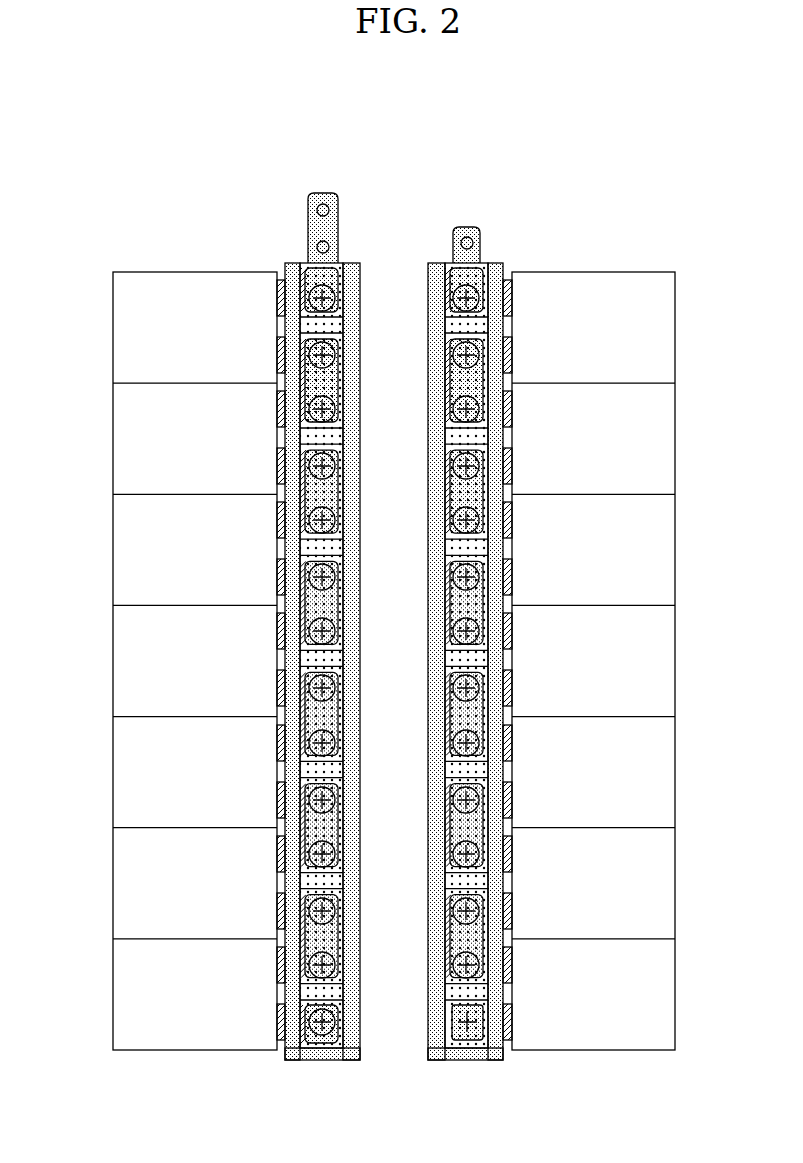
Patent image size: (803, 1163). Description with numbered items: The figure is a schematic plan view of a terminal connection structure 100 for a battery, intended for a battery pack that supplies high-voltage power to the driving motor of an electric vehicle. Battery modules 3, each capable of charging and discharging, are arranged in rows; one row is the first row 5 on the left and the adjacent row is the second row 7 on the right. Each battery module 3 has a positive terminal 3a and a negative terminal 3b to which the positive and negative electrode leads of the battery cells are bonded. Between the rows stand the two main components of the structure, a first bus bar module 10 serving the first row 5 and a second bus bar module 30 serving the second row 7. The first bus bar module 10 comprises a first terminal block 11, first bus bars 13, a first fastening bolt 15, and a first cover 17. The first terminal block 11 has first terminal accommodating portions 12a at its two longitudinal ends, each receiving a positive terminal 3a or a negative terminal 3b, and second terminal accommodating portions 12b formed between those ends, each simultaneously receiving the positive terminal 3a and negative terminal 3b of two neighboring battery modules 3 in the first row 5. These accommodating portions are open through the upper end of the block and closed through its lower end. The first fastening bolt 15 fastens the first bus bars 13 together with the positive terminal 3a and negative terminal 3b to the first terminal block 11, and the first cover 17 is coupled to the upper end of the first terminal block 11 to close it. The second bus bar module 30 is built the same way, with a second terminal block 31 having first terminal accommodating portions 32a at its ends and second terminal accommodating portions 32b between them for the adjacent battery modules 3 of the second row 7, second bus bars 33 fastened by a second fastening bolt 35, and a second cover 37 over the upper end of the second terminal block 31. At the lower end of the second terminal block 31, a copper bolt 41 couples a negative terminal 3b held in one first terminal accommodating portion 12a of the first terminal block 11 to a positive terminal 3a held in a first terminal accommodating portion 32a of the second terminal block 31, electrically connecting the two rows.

The terminal connection structure 100 is at (406, 120).
The battery module 3 is at (135, 551).
The positive terminal 3a is at (277, 297).
The negative terminal 3b is at (277, 352).
The first row 5 is at (166, 258).
The second row 7 is at (611, 255).
The first bus bar module 10 is at (242, 641).
The first terminal block 11 is at (366, 476).
The first terminal accommodating portion 12a is at (335, 300).
The second terminal accommodating portion 12b is at (345, 610).
The first bus bar 13 is at (308, 220).
The first fastening bolt 15 is at (300, 412).
The first cover 17 is at (305, 263).
The second bus bar module 30 is at (562, 637).
The second terminal block 31 is at (514, 490).
The first terminal accommodating portion 32a is at (448, 268).
The second terminal accommodating portion 32b is at (482, 630).
The second bus bar 33 is at (466, 228).
The second fastening bolt 35 is at (478, 575).
The second cover 37 is at (450, 265).
The copper bolt 41 is at (490, 1022).